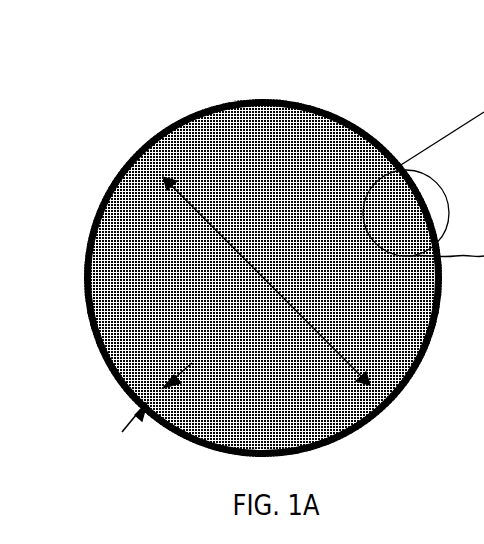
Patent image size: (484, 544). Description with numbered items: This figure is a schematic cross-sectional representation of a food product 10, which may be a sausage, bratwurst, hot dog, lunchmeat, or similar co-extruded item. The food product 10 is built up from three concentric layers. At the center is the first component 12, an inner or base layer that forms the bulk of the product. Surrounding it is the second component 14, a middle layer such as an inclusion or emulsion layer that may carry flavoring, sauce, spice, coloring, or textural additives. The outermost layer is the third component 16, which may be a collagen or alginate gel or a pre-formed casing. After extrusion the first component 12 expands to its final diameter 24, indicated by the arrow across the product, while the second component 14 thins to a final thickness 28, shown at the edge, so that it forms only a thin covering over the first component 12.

The food product 10 is at (160, 103).
The first component 12 is at (148, 215).
The second component 14 is at (105, 258).
The third component 16 is at (412, 382).
The final diameter 24 is at (265, 277).
The final thickness 28 is at (163, 387).